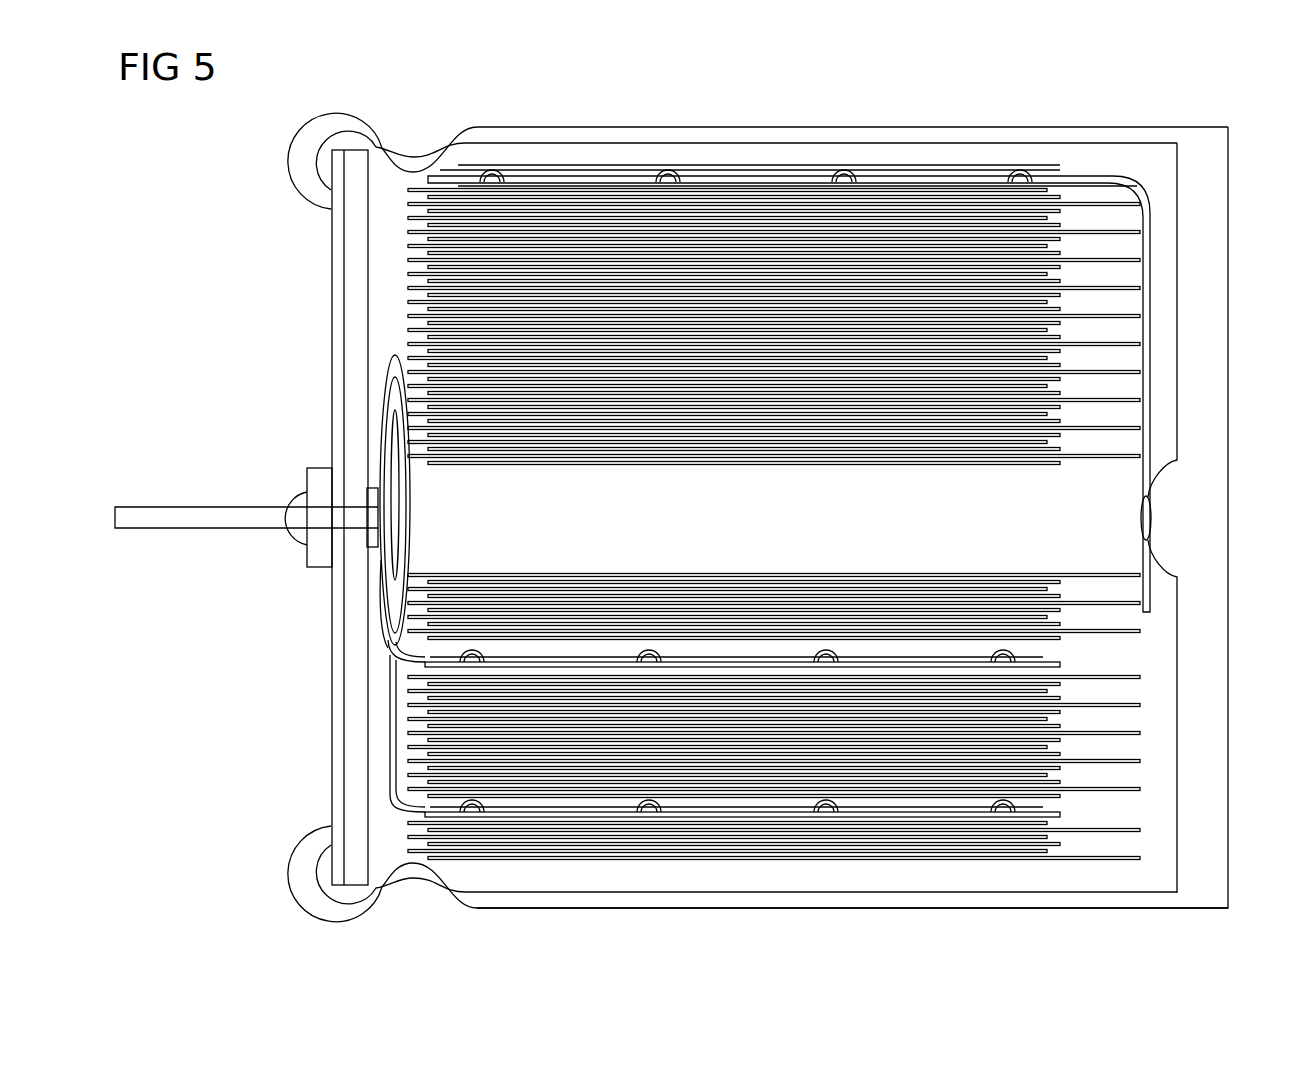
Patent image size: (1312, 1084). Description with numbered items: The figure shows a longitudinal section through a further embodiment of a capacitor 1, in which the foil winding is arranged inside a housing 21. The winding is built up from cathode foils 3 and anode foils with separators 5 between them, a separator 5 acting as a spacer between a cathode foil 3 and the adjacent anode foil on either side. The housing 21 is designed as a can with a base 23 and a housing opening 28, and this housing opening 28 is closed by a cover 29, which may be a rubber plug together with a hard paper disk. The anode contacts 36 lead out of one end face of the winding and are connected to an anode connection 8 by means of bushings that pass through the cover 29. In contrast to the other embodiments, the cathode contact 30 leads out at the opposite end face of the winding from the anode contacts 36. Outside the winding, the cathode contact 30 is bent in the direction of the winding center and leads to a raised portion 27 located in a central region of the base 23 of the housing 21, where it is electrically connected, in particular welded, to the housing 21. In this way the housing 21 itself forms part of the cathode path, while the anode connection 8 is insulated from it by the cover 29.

The capacitor 1 is at (1228, 120).
The cathode foil 3 is at (946, 206).
The separator 5 is at (528, 192).
The anode connection 8 is at (193, 523).
The housing 21 is at (1212, 254).
The base 23 is at (1212, 376).
The raised portion 27 is at (1172, 516).
The housing opening 28 is at (326, 335).
The cover 29 is at (352, 270).
The cathode contact 30 is at (626, 177).
The anode contacts 36 is at (555, 818).